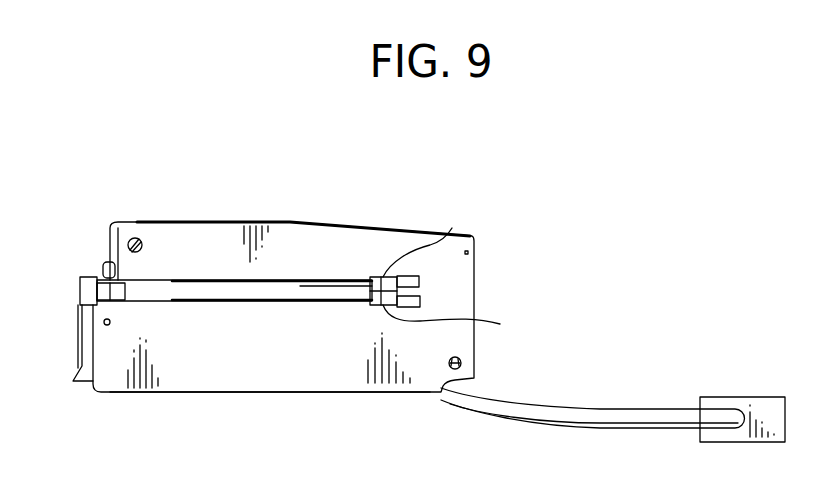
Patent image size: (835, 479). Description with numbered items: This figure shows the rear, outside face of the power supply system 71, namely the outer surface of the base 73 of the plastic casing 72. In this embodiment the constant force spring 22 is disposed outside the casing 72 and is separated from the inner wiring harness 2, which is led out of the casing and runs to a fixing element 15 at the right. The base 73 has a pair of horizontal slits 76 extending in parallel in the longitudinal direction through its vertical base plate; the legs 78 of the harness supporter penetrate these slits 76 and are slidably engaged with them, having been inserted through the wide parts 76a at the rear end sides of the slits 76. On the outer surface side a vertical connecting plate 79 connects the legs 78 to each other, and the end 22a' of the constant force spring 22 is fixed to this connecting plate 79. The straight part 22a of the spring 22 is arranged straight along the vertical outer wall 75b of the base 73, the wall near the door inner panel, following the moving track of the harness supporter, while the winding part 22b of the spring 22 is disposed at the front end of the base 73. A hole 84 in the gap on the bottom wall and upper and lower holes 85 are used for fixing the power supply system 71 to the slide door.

The wiring harness 2 is at (578, 408).
The mounting block 15 is at (738, 396).
The constant force spring 22 is at (157, 276).
The straight part 22a is at (272, 242).
The end 22a' is at (336, 216).
The winding part 22b is at (103, 268).
The power supply system 71 is at (485, 171).
The casing 72 is at (371, 221).
The base 73 is at (338, 399).
The vertical outer wall 75b is at (220, 372).
The slits 76 is at (228, 232).
The wide parts 76a is at (412, 282).
The legs 78 is at (452, 228).
The connecting plate 79 is at (370, 296).
The hole 84 is at (104, 322).
The holes 85 is at (130, 241).